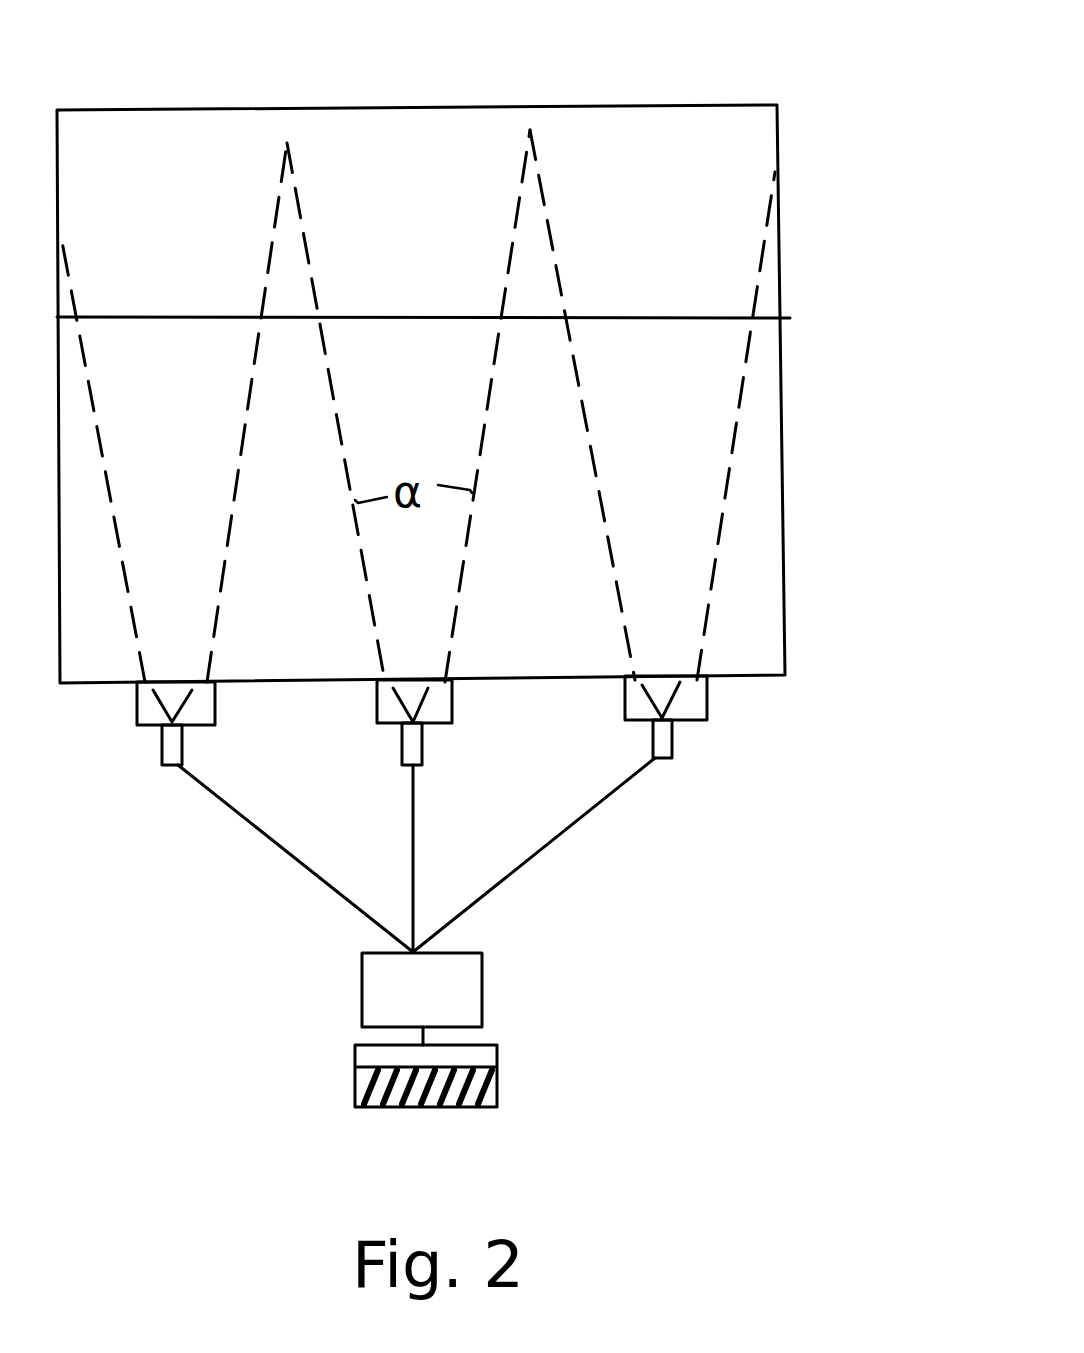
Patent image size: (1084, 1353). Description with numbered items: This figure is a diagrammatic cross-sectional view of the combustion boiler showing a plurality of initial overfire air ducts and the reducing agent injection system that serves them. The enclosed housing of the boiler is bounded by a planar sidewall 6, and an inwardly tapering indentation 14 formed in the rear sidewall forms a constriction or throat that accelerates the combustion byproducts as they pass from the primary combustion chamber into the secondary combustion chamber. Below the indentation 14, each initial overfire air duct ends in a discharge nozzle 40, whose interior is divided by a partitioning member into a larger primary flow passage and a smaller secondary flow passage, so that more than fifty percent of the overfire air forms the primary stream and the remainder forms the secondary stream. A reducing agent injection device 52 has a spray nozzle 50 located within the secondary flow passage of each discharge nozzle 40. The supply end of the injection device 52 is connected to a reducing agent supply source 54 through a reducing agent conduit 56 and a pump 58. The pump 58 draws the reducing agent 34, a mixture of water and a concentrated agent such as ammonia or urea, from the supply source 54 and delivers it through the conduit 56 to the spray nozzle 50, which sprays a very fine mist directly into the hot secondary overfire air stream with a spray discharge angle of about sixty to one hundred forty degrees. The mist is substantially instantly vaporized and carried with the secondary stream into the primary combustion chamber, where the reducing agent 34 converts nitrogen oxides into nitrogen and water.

The sidewall 6 is at (515, 108).
The inwardly tapering indentation 14 is at (713, 315).
The discharge nozzle 40 is at (692, 697).
The spray nozzle 50 is at (660, 740).
The reducing agent conduit 56 is at (265, 838).
The pump 58 is at (460, 987).
The reducing agent supply source 54 is at (355, 1048).
The reducing agent 34 is at (473, 1073).
The reducing agent injection device 52 is at (676, 954).